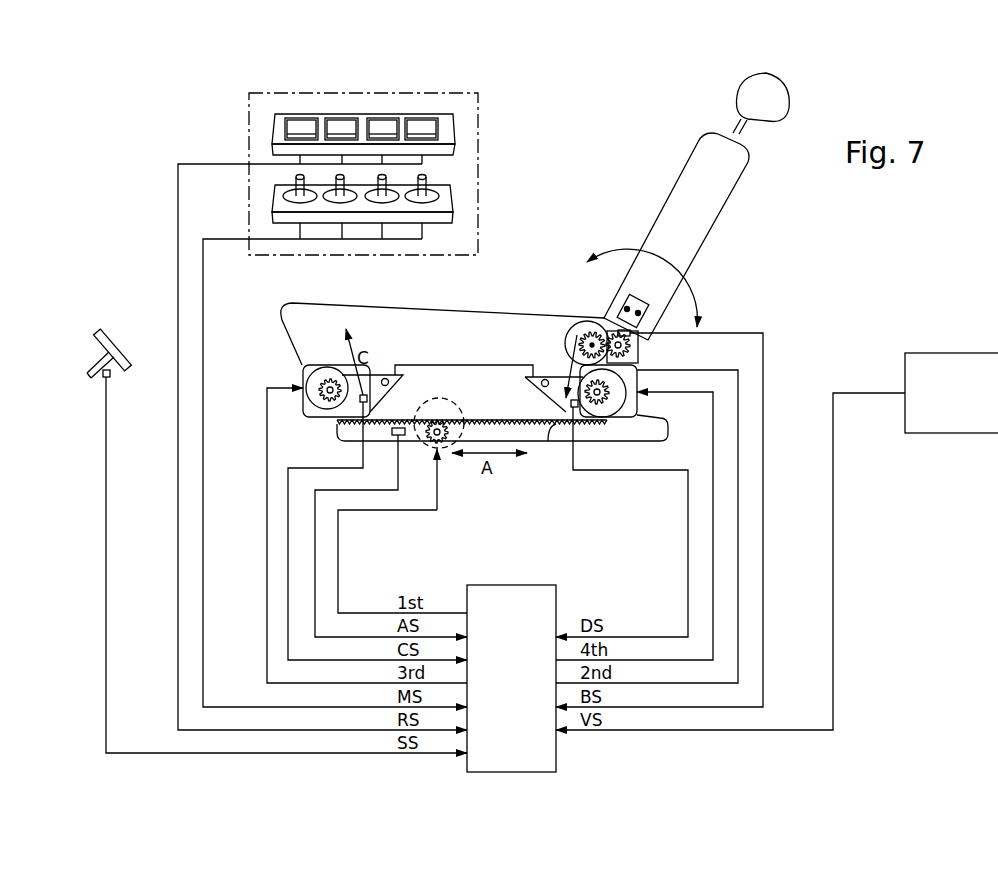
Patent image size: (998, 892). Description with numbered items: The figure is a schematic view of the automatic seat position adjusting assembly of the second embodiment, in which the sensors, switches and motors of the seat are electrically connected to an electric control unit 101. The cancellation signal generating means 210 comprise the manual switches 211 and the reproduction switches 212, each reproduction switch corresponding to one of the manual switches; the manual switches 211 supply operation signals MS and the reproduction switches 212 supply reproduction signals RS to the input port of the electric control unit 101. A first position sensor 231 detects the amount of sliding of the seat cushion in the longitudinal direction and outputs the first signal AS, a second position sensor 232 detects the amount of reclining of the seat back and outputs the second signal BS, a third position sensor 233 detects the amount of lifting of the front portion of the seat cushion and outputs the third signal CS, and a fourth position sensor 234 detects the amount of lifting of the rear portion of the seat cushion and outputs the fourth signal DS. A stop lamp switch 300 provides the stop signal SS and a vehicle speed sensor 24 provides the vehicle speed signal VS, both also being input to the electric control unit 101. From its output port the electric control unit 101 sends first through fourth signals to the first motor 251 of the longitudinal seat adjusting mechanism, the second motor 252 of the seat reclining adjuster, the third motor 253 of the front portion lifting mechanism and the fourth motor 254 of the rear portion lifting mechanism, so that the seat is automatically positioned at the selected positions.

The electric control unit 101 is at (558, 590).
The vehicle speed sensor 24 is at (943, 352).
The stop lamp switch 300 is at (115, 335).
The cancellation signal generating means 210 is at (478, 153).
The manual switches 211 is at (448, 205).
The reproduction switches 212 is at (402, 117).
The first position sensor 231 is at (412, 410).
The second position sensor 232 is at (606, 322).
The third position sensor 233 is at (345, 425).
The fourth position sensor 234 is at (556, 413).
The first motor 251 is at (446, 452).
The second motor 252 is at (585, 322).
The third motor 253 is at (303, 382).
The fourth motor 254 is at (657, 366).